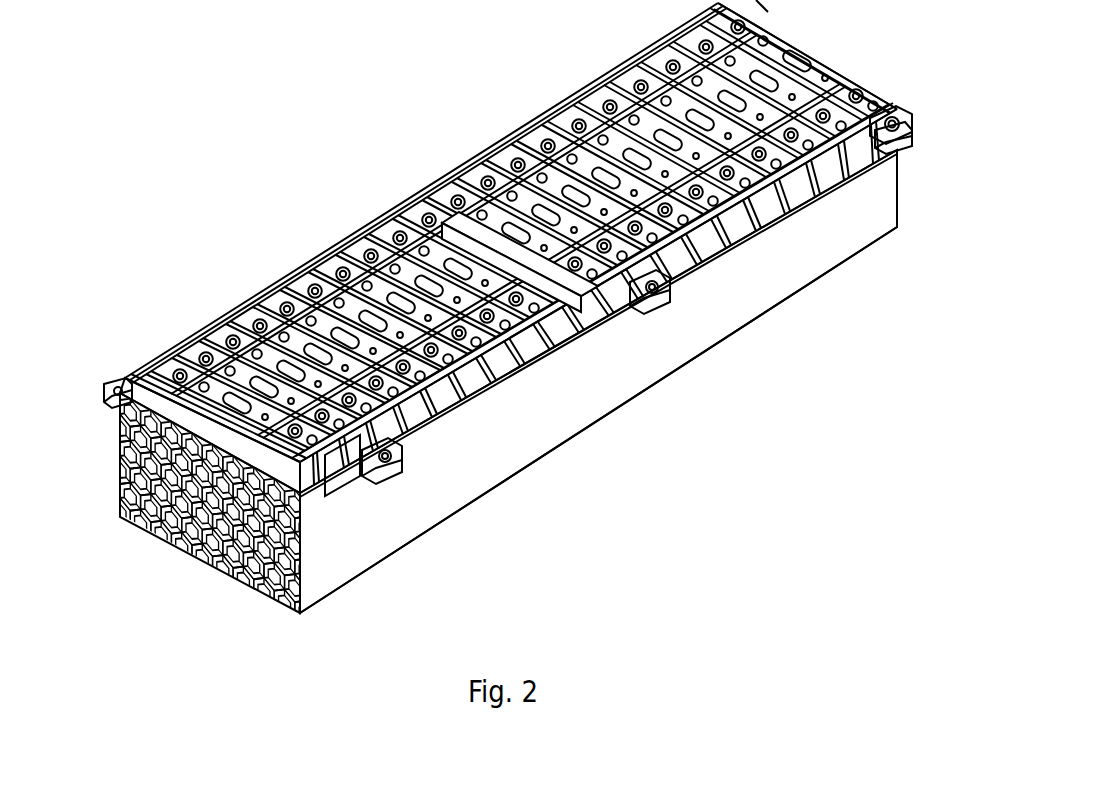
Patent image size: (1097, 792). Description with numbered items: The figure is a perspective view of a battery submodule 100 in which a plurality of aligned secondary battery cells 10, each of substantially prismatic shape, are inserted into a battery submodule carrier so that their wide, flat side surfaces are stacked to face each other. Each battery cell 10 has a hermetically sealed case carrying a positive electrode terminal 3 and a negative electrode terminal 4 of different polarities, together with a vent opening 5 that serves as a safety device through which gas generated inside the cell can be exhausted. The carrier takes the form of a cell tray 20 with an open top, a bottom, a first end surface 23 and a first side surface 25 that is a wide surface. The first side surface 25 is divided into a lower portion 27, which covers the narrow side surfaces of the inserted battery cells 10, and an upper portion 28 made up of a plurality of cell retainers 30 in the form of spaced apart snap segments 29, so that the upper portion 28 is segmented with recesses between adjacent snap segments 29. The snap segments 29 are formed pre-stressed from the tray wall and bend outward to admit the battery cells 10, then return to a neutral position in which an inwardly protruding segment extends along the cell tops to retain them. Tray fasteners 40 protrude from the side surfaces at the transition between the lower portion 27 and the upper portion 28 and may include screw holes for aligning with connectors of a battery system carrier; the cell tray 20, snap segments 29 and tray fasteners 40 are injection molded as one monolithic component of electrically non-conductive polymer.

The battery submodule 100 is at (203, 182).
The positive electrode terminal 3 is at (226, 312).
The negative electrode terminal 4 is at (842, 72).
The vent opening 5 is at (800, 52).
The secondary battery cell 10 is at (288, 287).
The cell tray 20 is at (344, 592).
The first end surface 23 is at (178, 545).
The first side surface 25 is at (628, 368).
The lower portion 27 is at (832, 255).
The upper portion 28 is at (897, 122).
The snap segment 29 is at (723, 222).
The cell retainer 30 is at (527, 353).
The tray fastener 40 is at (108, 388).